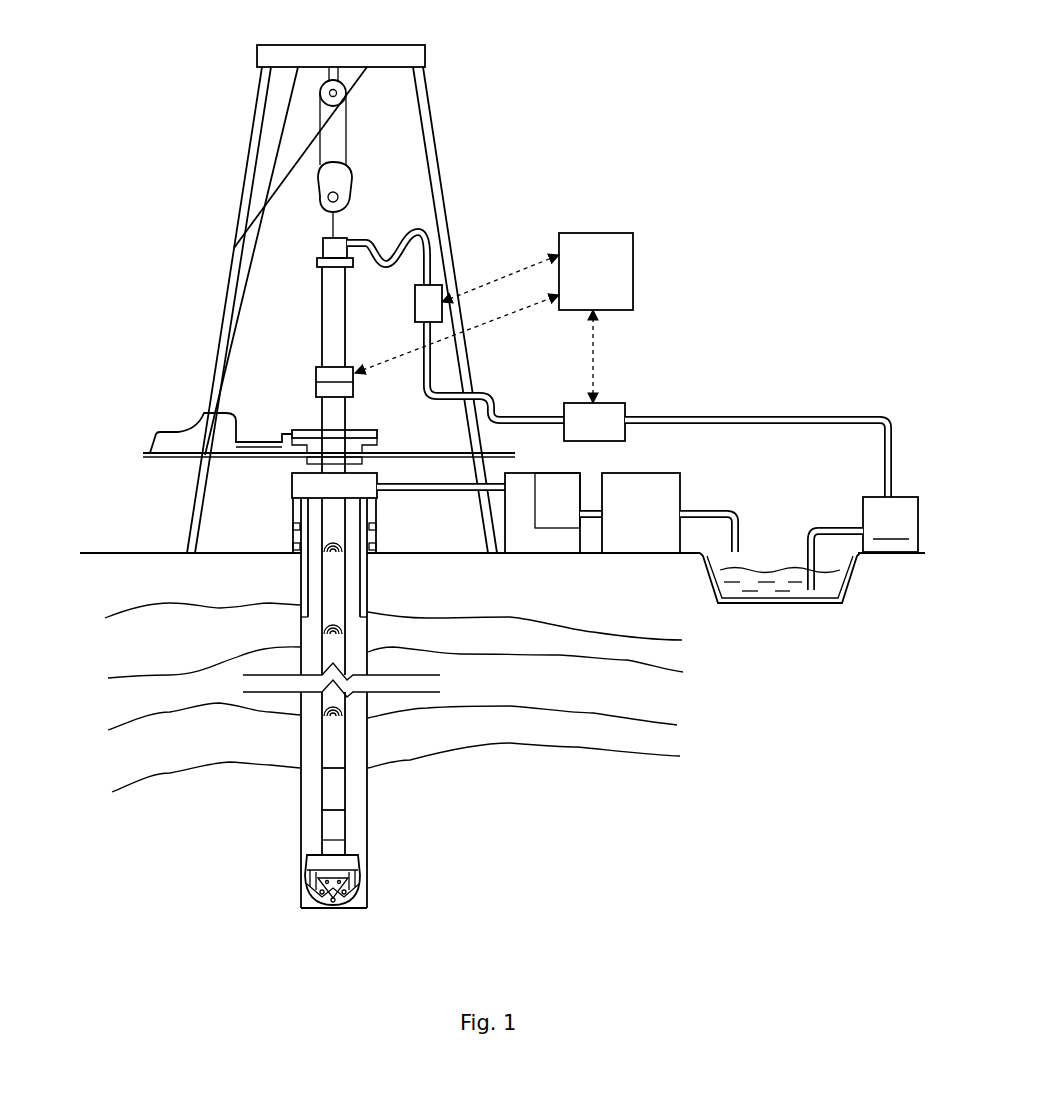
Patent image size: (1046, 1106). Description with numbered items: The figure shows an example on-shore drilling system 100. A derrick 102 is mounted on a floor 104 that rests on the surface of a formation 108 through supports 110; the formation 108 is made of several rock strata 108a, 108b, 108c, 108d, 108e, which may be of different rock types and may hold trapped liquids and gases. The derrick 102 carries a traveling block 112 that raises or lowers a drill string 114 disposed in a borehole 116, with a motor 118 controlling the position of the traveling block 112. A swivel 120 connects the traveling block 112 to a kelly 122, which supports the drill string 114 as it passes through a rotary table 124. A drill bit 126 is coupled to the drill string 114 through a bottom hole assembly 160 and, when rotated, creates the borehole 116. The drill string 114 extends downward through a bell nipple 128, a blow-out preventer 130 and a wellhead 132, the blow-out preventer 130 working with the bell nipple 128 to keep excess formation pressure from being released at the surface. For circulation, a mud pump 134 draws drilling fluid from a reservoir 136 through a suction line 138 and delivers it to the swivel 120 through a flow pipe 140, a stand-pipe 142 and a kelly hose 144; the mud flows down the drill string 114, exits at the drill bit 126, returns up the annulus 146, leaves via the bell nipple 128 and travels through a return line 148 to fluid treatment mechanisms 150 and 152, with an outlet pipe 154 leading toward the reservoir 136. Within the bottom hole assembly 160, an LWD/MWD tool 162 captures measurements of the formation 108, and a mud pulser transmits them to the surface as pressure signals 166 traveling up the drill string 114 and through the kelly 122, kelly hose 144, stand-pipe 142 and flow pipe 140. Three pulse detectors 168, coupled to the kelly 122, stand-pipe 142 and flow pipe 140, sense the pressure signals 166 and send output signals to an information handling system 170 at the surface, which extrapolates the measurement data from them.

The drilling system 100 is at (612, 83).
The derrick 102 is at (433, 140).
The floor 104 is at (146, 453).
The formation 108 is at (178, 649).
The rock stratum 108a is at (553, 607).
The rock stratum 108b is at (553, 648).
The rock stratum 108c is at (553, 692).
The rock stratum 108d is at (553, 735).
The rock stratum 108e is at (553, 782).
The supports 110 is at (192, 507).
The traveling block 112 is at (320, 198).
The drill string 114 is at (347, 652).
The borehole 116 is at (300, 635).
The motor 118 is at (157, 432).
The swivel 120 is at (322, 243).
The kelly 122 is at (322, 327).
The rotary table 124 is at (303, 430).
The drill bit 126 is at (355, 855).
The bell nipple 128 is at (291, 480).
The blow-out preventer 130 is at (292, 517).
The wellhead 132 is at (370, 592).
The mud pump 134 is at (890, 524).
The reservoir 136 is at (770, 605).
The suction line 138 is at (837, 525).
The flow pipe 140 is at (790, 417).
The stand-pipe 142 is at (420, 392).
The kelly hose 144 is at (367, 134).
The annulus 146 is at (347, 750).
The return line 148 is at (398, 492).
The fluid treatment mechanism 150 is at (555, 540).
The fluid treatment mechanism 152 is at (643, 538).
The outlet pipe 154 is at (700, 510).
The bottom hole assembly 160 is at (300, 797).
The LWD/MWD tool 162 is at (325, 830).
The pressure signals 166 is at (148, 552).
The pulse detectors 168 is at (315, 375).
The information handling system 170 is at (494, 318).